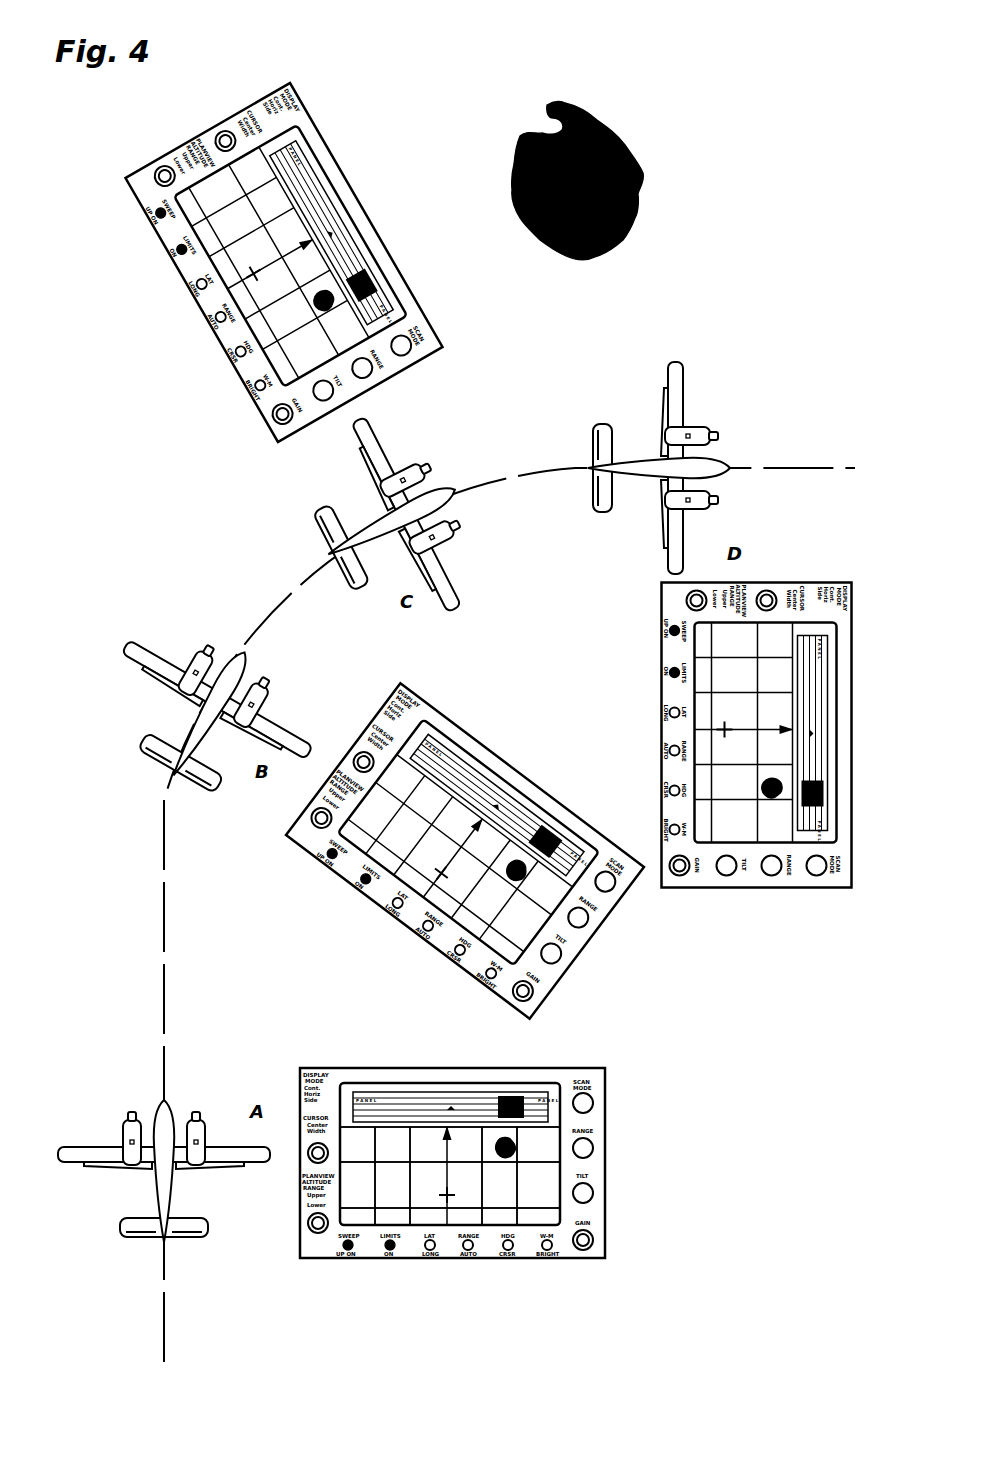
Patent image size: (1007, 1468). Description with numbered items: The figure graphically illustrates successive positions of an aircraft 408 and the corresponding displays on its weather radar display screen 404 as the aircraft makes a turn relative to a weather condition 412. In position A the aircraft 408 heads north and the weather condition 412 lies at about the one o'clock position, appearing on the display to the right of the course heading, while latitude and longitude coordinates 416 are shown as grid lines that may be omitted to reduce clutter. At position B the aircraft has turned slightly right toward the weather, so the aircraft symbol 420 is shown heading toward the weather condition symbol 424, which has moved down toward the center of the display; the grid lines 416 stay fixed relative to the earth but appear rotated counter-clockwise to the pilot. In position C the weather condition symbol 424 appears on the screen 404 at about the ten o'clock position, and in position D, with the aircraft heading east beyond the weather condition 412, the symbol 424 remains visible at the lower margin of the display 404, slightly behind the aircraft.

The display screen 404 is at (393, 260).
The aircraft 408 is at (107, 1170).
The weather condition 412 is at (620, 138).
The latitude and longitude coordinates 416 is at (493, 1208).
The aircraft symbol 420 is at (253, 278).
The weather condition symbol 424 is at (238, 228).